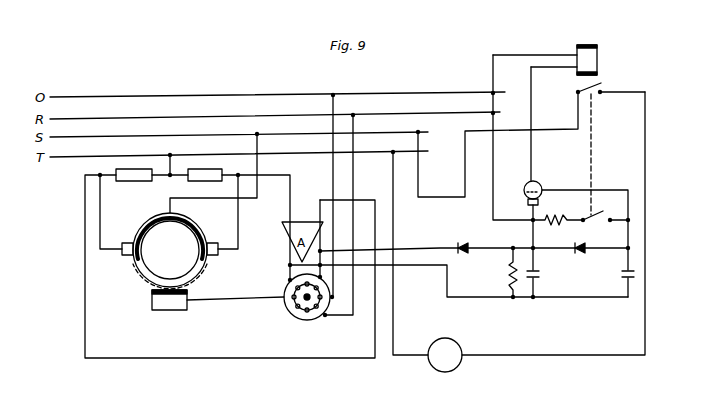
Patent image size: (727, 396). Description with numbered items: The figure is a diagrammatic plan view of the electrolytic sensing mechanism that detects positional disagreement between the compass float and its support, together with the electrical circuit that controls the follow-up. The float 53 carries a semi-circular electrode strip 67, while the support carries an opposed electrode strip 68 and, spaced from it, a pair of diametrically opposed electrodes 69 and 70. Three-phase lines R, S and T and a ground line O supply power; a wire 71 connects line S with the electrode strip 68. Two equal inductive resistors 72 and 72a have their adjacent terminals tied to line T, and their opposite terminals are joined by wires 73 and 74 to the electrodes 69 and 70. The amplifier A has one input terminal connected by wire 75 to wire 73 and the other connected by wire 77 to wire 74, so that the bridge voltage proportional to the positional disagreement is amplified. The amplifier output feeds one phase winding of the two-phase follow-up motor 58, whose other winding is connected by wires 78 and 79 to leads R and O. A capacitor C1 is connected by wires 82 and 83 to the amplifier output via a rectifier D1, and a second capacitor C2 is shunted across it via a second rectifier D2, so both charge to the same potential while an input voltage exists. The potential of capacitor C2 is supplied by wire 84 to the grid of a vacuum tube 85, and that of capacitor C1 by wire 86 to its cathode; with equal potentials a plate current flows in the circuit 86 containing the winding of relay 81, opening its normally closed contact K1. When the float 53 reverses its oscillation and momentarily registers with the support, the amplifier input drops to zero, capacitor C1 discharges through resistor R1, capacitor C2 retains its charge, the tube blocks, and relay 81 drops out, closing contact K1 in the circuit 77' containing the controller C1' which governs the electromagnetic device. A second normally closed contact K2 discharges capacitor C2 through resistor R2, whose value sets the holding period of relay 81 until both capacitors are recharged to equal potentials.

The float 53 is at (150, 272).
The two-phase follow-up motor 58 is at (298, 318).
The semi-circular electrode strip 67 is at (140, 234).
The opposed electrode strip 68 is at (154, 217).
The electrode 69 is at (123, 258).
The electrode 70 is at (220, 258).
The wire 71 is at (226, 200).
The inductive resistor 72 is at (131, 168).
The inductive resistor 72a is at (197, 168).
The wire 73 is at (240, 229).
The wire 74 is at (100, 190).
The wire 75 is at (290, 190).
The wire 77 is at (230, 266).
The circuit 77' is at (553, 224).
The wire 78 is at (333, 122).
The wire 79 is at (353, 125).
The relay 81 is at (587, 58).
The wire 82 is at (434, 244).
The wire 83 is at (431, 267).
The wire 84 is at (630, 232).
The vacuum tube 85 is at (540, 183).
The wire 86 is at (531, 118).
The normally closed contact K1 is at (611, 149).
The second normally closed contact K2 is at (605, 212).
The resistor R1 is at (506, 272).
The resistor R2 is at (558, 214).
The capacitor C1 is at (542, 281).
The capacitor C2 is at (626, 274).
The controller C1' is at (445, 355).
The rectifier D1 is at (468, 242).
The rectifier D2 is at (578, 254).